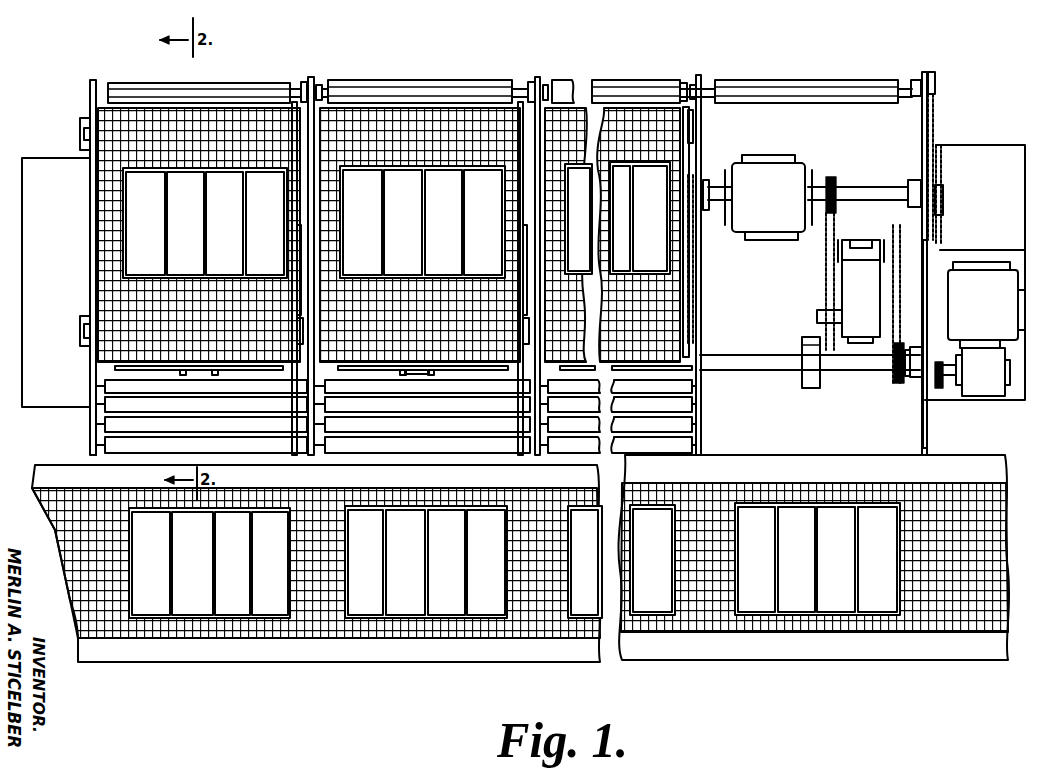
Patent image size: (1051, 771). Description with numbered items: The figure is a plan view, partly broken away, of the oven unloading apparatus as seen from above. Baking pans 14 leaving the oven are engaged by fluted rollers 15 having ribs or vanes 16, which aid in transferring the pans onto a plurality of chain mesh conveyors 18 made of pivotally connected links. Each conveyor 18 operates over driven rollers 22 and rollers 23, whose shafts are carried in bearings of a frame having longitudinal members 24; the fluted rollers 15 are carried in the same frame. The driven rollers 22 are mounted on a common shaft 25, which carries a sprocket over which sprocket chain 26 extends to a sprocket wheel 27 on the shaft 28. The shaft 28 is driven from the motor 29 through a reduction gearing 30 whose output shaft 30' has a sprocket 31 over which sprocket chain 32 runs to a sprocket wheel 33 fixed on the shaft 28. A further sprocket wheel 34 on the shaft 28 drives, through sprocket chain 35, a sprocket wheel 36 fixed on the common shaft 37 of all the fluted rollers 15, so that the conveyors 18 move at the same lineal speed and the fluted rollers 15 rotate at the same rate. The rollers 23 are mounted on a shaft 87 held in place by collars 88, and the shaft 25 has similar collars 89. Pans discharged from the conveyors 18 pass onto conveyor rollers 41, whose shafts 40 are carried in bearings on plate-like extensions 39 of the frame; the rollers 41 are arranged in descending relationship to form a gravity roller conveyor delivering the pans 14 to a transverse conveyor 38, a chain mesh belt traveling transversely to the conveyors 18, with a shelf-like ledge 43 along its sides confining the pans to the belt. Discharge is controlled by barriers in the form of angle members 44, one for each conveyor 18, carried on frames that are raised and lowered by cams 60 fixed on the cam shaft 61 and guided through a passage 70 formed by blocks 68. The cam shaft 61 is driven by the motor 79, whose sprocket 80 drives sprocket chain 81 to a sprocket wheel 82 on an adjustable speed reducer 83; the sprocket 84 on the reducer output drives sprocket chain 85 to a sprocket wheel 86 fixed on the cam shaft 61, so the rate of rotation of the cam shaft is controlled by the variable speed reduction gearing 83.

The baking pans 14 is at (265, 175).
The fluted roller 15 is at (195, 88).
The ribs or vanes 16 is at (655, 85).
The conveyors 18 is at (126, 122).
The rollers 22 is at (298, 240).
The rollers 23 is at (93, 105).
The longitudinal members 24 is at (88, 190).
The common shaft 25 is at (84, 330).
The sprocket chain 26 is at (696, 266).
The sprocket wheel 27 is at (706, 180).
The shaft 28 is at (860, 190).
The motor 29 is at (985, 270).
The reduction gearing 30 is at (986, 343).
The output shaft 30' is at (976, 387).
The sprocket 31 is at (930, 392).
The sprocket chain 32 is at (940, 260).
The sprocket wheel 33 is at (944, 168).
The sprocket wheel 34 is at (912, 206).
The sprocket chain 35 is at (935, 120).
The sprocket wheel 36 is at (932, 72).
The common shaft 37 is at (318, 84).
The transverse conveyor 38 is at (312, 660).
The plate-like extensions 39 is at (92, 430).
The shafts 40 is at (315, 450).
The conveyor rollers 41 is at (100, 410).
The shelf-like ledge 43 is at (790, 472).
The angle members 44 is at (115, 368).
The cam 60 is at (812, 390).
The shaft 61 is at (850, 372).
The blocks 68 is at (183, 375).
The passage 70 is at (417, 376).
The motor 79 is at (755, 168).
The sprocket 80 is at (834, 178).
The sprocket chain 81 is at (824, 256).
The sprocket wheel 82 is at (840, 286).
The adjustable speed reducer 83 is at (845, 295).
The sprocket 84 is at (880, 245).
The sprocket chain 85 is at (900, 245).
The sprocket wheel 86 is at (900, 344).
The shaft 87 is at (78, 126).
The collars 88 is at (84, 142).
The collars 89 is at (82, 318).